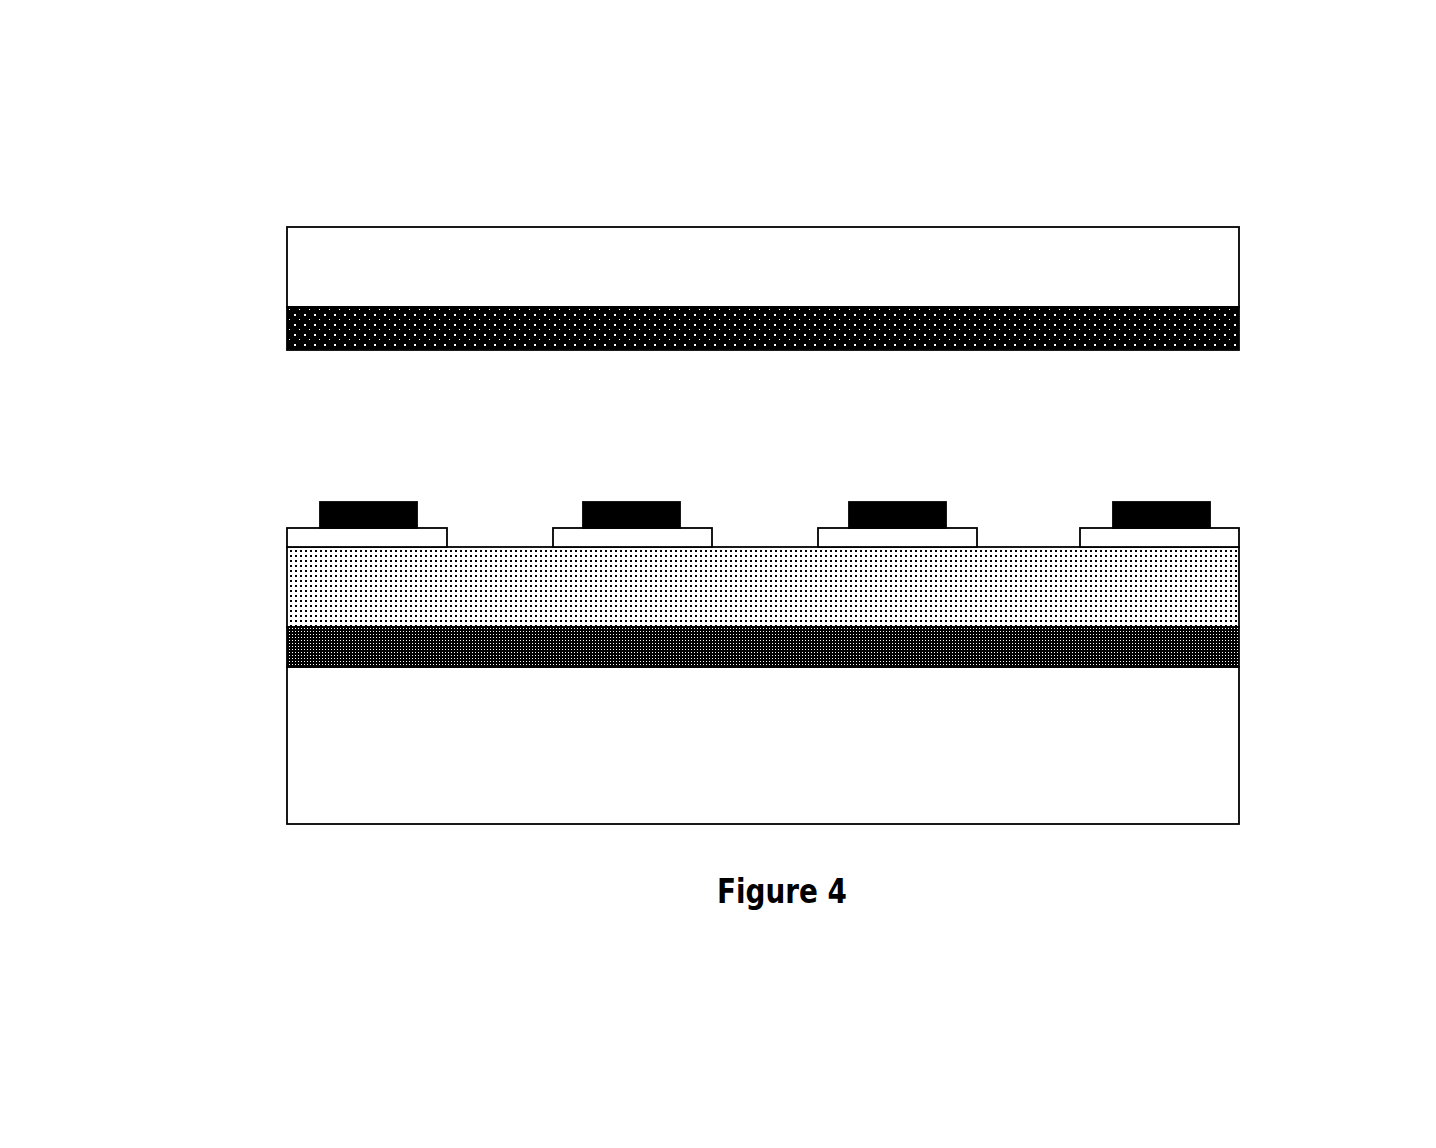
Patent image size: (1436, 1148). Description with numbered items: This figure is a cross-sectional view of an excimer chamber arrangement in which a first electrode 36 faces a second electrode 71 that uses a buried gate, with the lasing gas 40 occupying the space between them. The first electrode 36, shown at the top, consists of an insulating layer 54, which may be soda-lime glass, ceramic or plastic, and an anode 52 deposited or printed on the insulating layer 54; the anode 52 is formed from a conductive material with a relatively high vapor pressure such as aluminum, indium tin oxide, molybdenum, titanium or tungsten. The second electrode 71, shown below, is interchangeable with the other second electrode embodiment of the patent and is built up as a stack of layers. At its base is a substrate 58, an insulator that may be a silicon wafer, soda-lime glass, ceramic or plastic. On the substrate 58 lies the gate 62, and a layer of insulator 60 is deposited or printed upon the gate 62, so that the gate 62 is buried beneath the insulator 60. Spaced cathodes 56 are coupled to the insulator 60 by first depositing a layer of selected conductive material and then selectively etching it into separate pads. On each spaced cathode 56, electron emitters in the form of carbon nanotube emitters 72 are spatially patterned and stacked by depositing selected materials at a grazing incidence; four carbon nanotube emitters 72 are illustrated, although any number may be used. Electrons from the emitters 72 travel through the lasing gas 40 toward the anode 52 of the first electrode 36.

The first electrode 36 is at (255, 231).
The lasing gas 40 is at (742, 446).
The anode 52 is at (857, 296).
The insulating layer 54 is at (857, 224).
The cathode 56 is at (857, 472).
The substrate 58 is at (857, 745).
The gate insulator 60 is at (857, 553).
The gate 62 is at (857, 617).
The second electrode 71 is at (255, 533).
The carbon nanotube emitters 72 is at (679, 472).